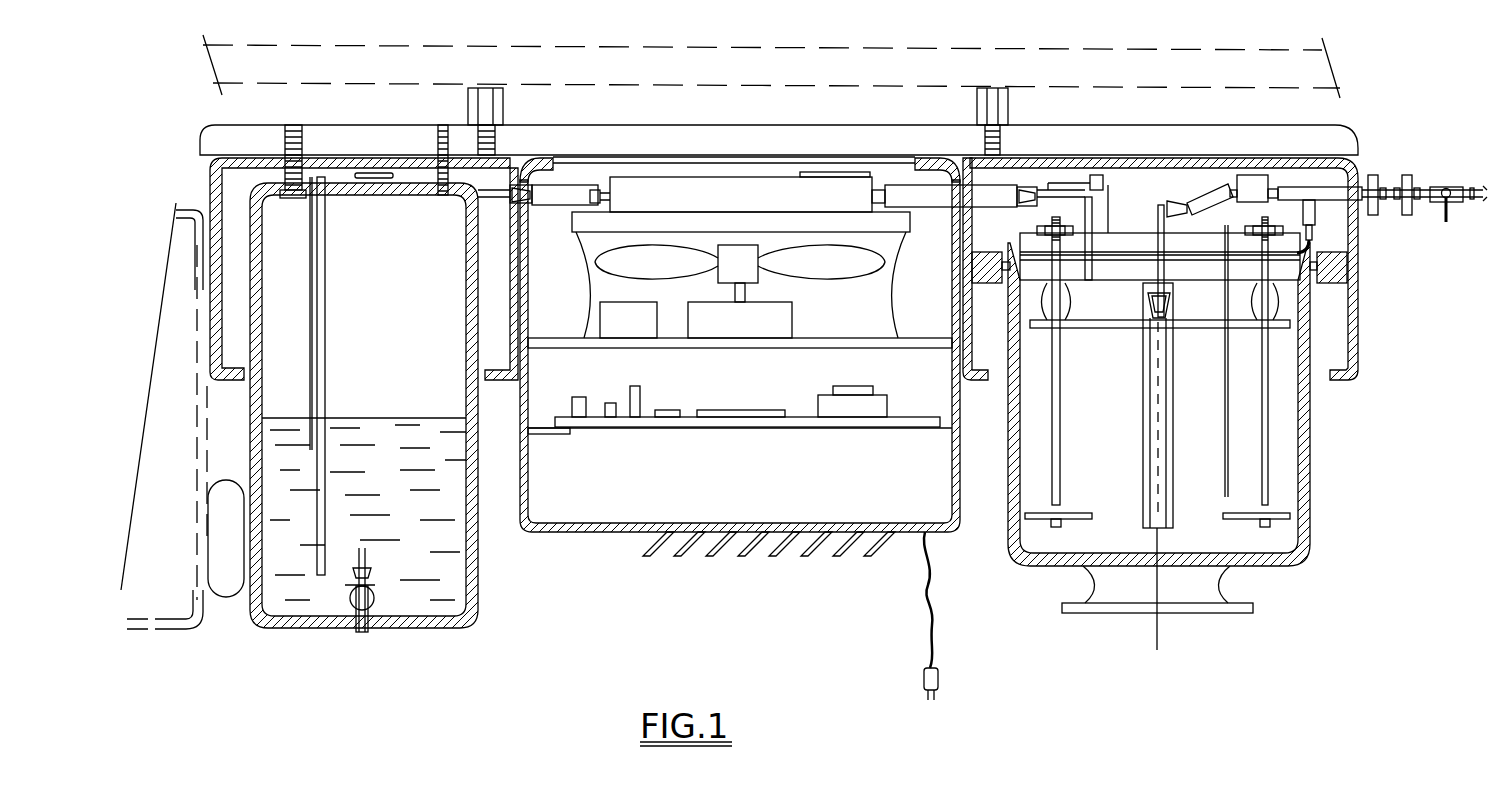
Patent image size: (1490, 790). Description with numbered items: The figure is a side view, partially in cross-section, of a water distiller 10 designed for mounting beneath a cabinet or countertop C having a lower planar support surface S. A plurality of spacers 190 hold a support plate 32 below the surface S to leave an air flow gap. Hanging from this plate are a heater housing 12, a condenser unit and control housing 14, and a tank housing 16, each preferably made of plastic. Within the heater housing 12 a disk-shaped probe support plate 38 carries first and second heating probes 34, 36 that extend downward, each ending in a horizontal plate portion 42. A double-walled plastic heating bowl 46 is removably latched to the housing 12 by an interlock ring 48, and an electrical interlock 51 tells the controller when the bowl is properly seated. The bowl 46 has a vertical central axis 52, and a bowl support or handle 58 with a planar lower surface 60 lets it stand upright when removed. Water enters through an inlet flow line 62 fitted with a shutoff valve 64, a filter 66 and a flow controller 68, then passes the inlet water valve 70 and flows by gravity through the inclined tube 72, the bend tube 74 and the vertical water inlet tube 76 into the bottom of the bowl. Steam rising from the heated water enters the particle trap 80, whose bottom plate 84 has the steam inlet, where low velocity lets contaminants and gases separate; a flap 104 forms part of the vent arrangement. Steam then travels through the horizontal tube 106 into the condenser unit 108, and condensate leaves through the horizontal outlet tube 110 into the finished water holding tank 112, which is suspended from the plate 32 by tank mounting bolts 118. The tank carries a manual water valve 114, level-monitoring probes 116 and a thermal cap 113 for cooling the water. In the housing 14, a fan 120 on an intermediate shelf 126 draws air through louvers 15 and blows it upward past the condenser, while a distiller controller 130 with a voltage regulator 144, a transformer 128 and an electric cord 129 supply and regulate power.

The water distiller 10 is at (632, 542).
The heater housing 12 is at (1355, 225).
The condenser unit and control housing 14 is at (578, 534).
The louvers 15 is at (706, 553).
The tank housing 16 is at (215, 185).
The support plate 32 is at (330, 136).
The first heating probe 34 is at (1061, 434).
The second heating probe 36 is at (1269, 429).
The probe support plate 38 is at (1122, 241).
The plate portion 42 is at (1070, 512).
The heating bowl 46 is at (1305, 471).
The interlock ring 48 is at (1338, 283).
The electrical interlock 51 is at (1318, 187).
The central axis 52 is at (1158, 631).
The bowl support or handle 58 is at (1110, 581).
The planar lower surface 60 is at (1110, 609).
The inlet flow line 62 is at (1392, 199).
The shutoff valve 64 is at (1447, 189).
The filter 66 is at (1407, 175).
The flow controller 68 is at (1373, 177).
The inlet water valve 70 is at (1260, 176).
The inclined tube 72 is at (1212, 196).
The bend tube 74 is at (1160, 263).
The water inlet tube 76 is at (1176, 446).
The particle trap 80 is at (1035, 288).
The bottom plate 84 is at (1082, 329).
The flap 104 is at (905, 160).
The horizontal tube 106 is at (937, 200).
The condenser unit 108 is at (712, 190).
The outlet tube 110 is at (560, 190).
The finished water holding tank 112 is at (432, 590).
The thermal cap 113 is at (233, 538).
The manual water valve 114 is at (352, 603).
The probes 116 is at (313, 288).
The tank mounting bolts 118 is at (287, 150).
The fan 120 is at (826, 270).
The intermediate shelf 126 is at (540, 343).
The transformer 128 is at (872, 416).
The electric cord 129 is at (925, 604).
The distiller controller 130 is at (668, 428).
The voltage regulator 144 is at (843, 391).
The spacers 190 is at (500, 106).
The cabinet or countertop C is at (1160, 80).
The support surface S is at (1310, 95).